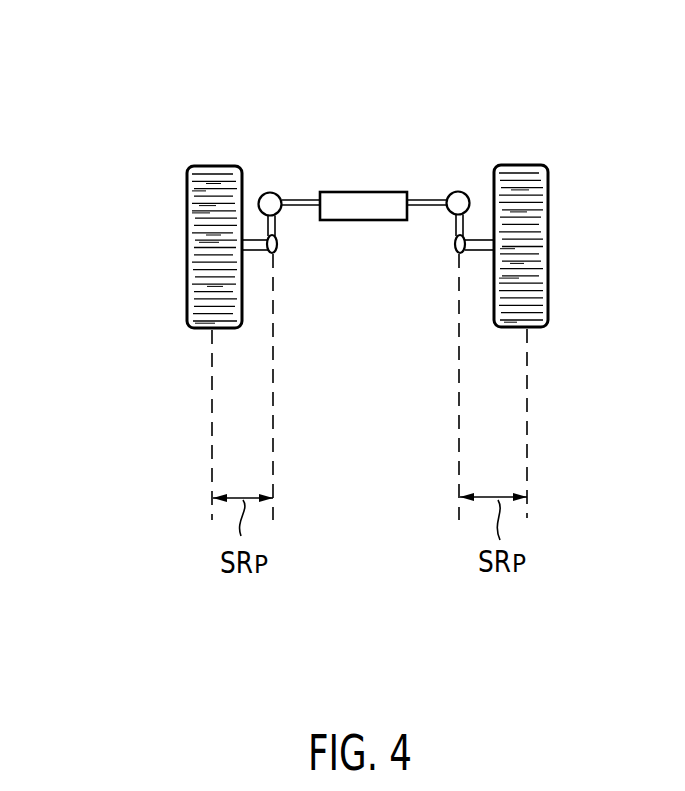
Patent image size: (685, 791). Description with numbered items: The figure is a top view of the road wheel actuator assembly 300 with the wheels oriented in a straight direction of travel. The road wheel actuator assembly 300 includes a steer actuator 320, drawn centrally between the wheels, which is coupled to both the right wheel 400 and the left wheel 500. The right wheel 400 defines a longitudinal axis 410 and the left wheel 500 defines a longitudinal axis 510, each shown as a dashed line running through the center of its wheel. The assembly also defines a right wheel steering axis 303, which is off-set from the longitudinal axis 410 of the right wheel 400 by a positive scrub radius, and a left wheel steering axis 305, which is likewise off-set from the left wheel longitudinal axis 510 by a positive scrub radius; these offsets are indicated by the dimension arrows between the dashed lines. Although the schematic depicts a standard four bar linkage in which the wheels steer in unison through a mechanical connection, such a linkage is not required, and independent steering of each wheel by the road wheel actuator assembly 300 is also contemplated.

The road wheel actuator assembly 300 is at (490, 115).
The steer actuator 320 is at (367, 193).
The left wheel 500 is at (187, 250).
The right wheel 400 is at (548, 230).
The longitudinal axis 510 is at (212, 363).
The longitudinal axis 410 is at (527, 438).
The left wheel steering axis 305 is at (274, 332).
The right wheel steering axis 303 is at (459, 392).